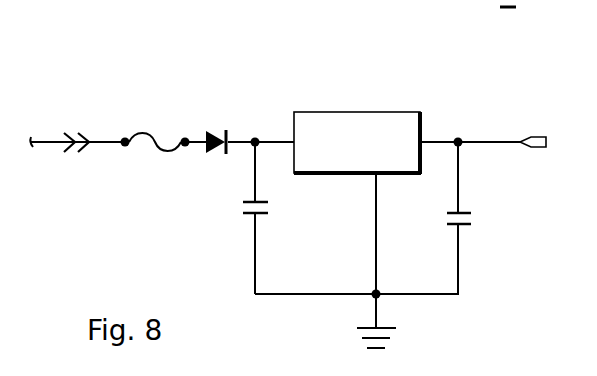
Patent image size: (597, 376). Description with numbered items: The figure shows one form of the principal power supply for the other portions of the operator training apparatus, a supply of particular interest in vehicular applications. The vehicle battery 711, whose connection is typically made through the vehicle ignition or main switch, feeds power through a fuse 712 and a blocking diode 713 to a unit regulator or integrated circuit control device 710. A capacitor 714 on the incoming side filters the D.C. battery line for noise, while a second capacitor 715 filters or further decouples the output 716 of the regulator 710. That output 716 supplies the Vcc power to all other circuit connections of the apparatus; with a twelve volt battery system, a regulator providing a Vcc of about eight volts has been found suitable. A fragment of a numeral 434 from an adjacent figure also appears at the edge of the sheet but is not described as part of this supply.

The unit regulator 710 is at (325, 124).
The vehicle battery 711 is at (34, 95).
The fuse 712 is at (137, 128).
The blocking diode 713 is at (212, 128).
The capacitor 714 is at (247, 224).
The capacitor 715 is at (472, 236).
The regulator output 716 is at (534, 130).
The fragment of adjacent figure 434 is at (0, 372).